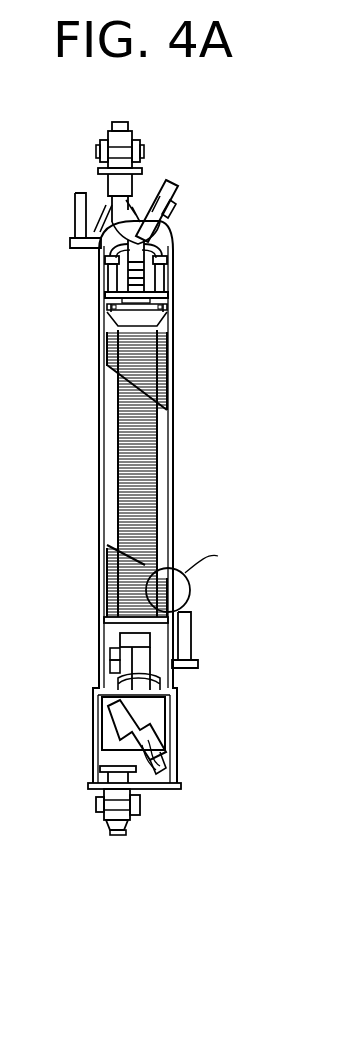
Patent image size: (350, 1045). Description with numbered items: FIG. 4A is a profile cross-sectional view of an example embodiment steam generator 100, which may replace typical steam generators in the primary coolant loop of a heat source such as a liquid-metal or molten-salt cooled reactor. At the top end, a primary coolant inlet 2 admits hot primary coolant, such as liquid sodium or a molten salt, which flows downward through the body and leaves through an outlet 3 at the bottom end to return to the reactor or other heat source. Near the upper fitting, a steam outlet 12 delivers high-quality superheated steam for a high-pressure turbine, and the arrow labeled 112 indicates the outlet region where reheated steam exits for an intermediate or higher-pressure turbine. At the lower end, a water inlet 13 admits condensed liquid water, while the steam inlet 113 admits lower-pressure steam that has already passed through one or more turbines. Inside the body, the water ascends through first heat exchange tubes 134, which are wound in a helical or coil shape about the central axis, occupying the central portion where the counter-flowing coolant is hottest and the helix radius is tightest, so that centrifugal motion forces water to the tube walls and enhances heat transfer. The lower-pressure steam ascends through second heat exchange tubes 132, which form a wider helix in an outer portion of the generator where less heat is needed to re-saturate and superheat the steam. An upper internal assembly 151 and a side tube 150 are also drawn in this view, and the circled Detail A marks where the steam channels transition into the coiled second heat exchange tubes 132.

The steam generator 100 is at (52, 598).
The outlet 112 is at (156, 126).
The outlet 12 is at (110, 128).
The primary coolant inlet 2 is at (164, 186).
The upper internal distributor assembly 151 is at (150, 266).
The second heat exchange tubes 132 is at (160, 344).
The first heat exchange tubes 134 is at (160, 498).
The side tube 150 is at (192, 631).
The steam inlet 113 is at (154, 840).
The outlet 3 is at (172, 756).
The water inlet 13 is at (136, 800).